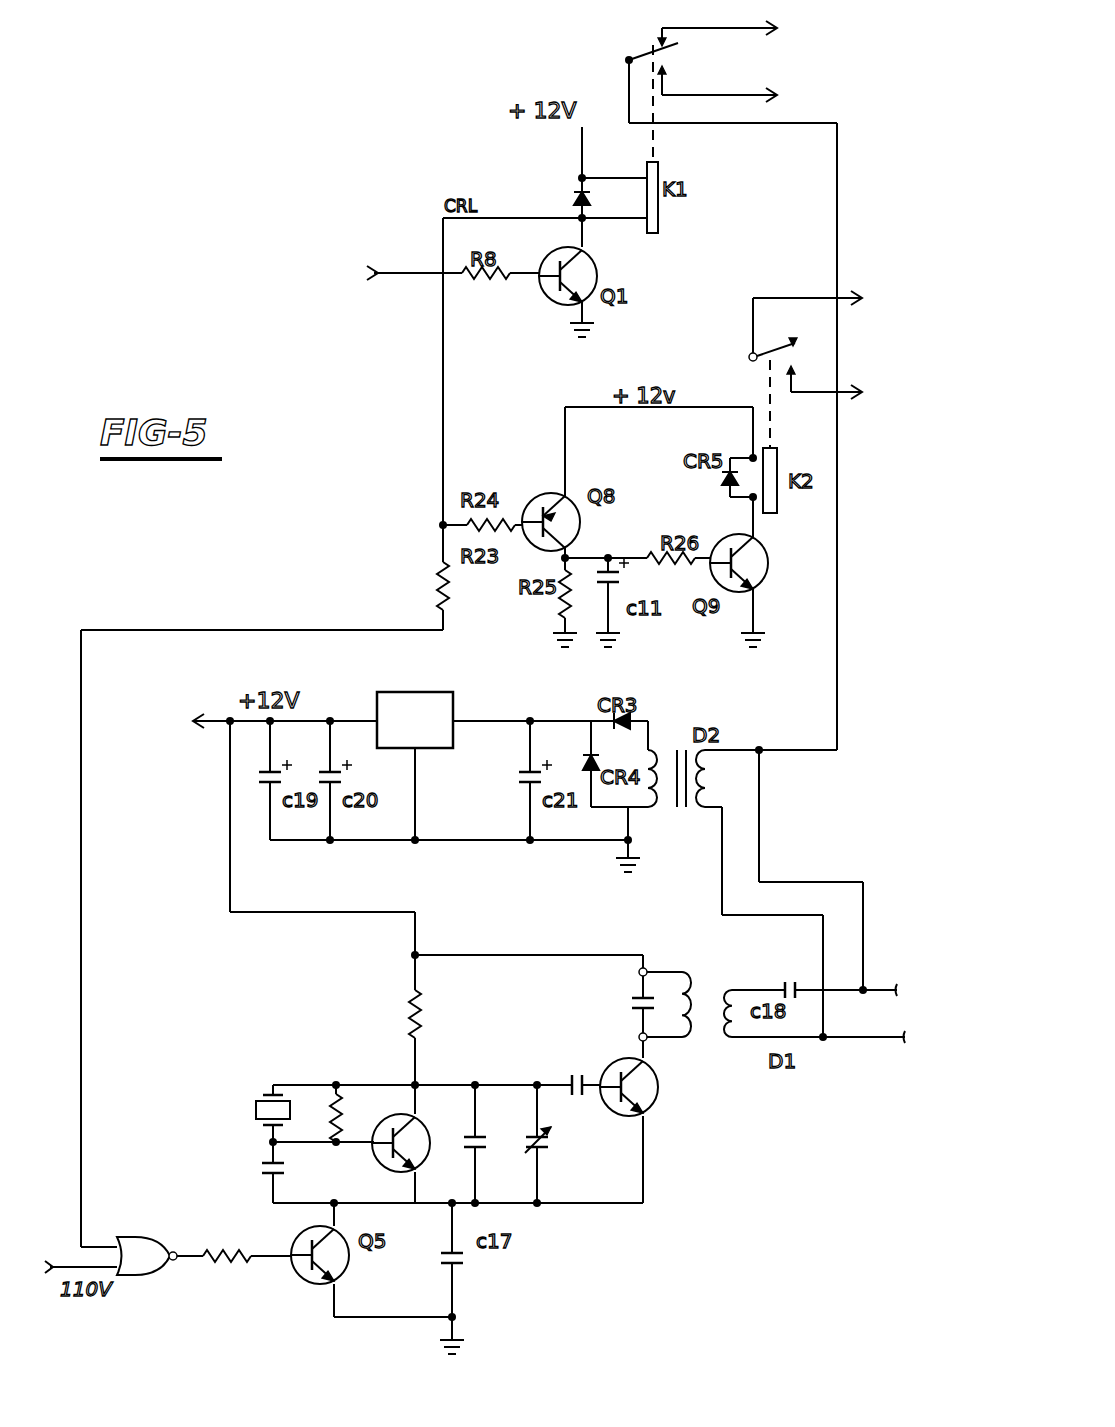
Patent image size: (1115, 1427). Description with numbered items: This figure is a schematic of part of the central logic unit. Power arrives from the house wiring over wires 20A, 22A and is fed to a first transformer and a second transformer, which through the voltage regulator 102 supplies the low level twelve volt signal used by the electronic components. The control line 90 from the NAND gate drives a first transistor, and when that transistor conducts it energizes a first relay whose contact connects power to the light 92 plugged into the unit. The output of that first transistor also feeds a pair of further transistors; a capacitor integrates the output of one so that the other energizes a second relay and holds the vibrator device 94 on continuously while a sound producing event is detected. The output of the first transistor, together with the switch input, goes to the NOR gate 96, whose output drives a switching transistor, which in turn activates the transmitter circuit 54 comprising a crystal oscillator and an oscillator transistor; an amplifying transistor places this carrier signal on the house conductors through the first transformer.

The control line 90 is at (364, 270).
The light 92 is at (734, 384).
The vibrator device 94 is at (834, 369).
The NOR gate 96 is at (138, 1240).
The voltage regulator 102 is at (394, 692).
The transmitter circuit 54 is at (370, 1083).
The wire 20A is at (885, 953).
The wire 22A is at (862, 1023).